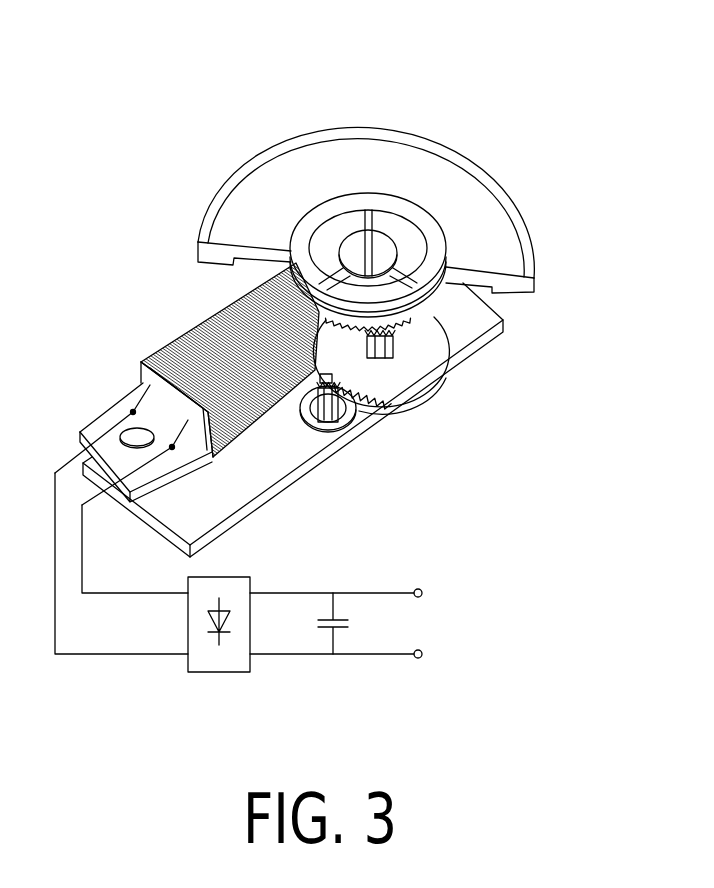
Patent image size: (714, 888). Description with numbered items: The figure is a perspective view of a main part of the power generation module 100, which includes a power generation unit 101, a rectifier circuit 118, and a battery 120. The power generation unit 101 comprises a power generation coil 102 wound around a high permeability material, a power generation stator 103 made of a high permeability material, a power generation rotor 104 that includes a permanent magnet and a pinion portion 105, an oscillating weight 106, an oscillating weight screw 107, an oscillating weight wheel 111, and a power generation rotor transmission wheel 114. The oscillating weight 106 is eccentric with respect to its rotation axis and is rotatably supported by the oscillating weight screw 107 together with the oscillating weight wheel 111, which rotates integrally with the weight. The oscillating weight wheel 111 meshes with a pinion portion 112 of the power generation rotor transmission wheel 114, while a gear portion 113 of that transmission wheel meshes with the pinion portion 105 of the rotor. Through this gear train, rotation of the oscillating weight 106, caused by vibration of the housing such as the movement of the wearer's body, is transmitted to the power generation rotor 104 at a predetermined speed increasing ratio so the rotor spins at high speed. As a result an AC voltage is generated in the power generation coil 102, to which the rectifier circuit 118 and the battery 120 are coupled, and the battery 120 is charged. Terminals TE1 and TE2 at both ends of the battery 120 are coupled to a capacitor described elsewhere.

The power generation module 100 is at (152, 72).
The power generation unit 101 is at (175, 183).
The power generation coil 102 is at (193, 330).
The power generation stator 103 is at (267, 488).
The power generation rotor 104 is at (347, 428).
The pinion portion 105 is at (336, 427).
The oscillating weight 106 is at (477, 153).
The oscillating weight screw 107 is at (387, 245).
The oscillating weight wheel 111 is at (437, 302).
The pinion portion 112 is at (397, 369).
The gear portion 113 is at (403, 398).
The power generation rotor transmission wheel 114 is at (442, 372).
The rectifier circuit 118 is at (225, 672).
The battery 120 is at (359, 626).
The terminal TE1 is at (418, 588).
The terminal TE2 is at (418, 659).